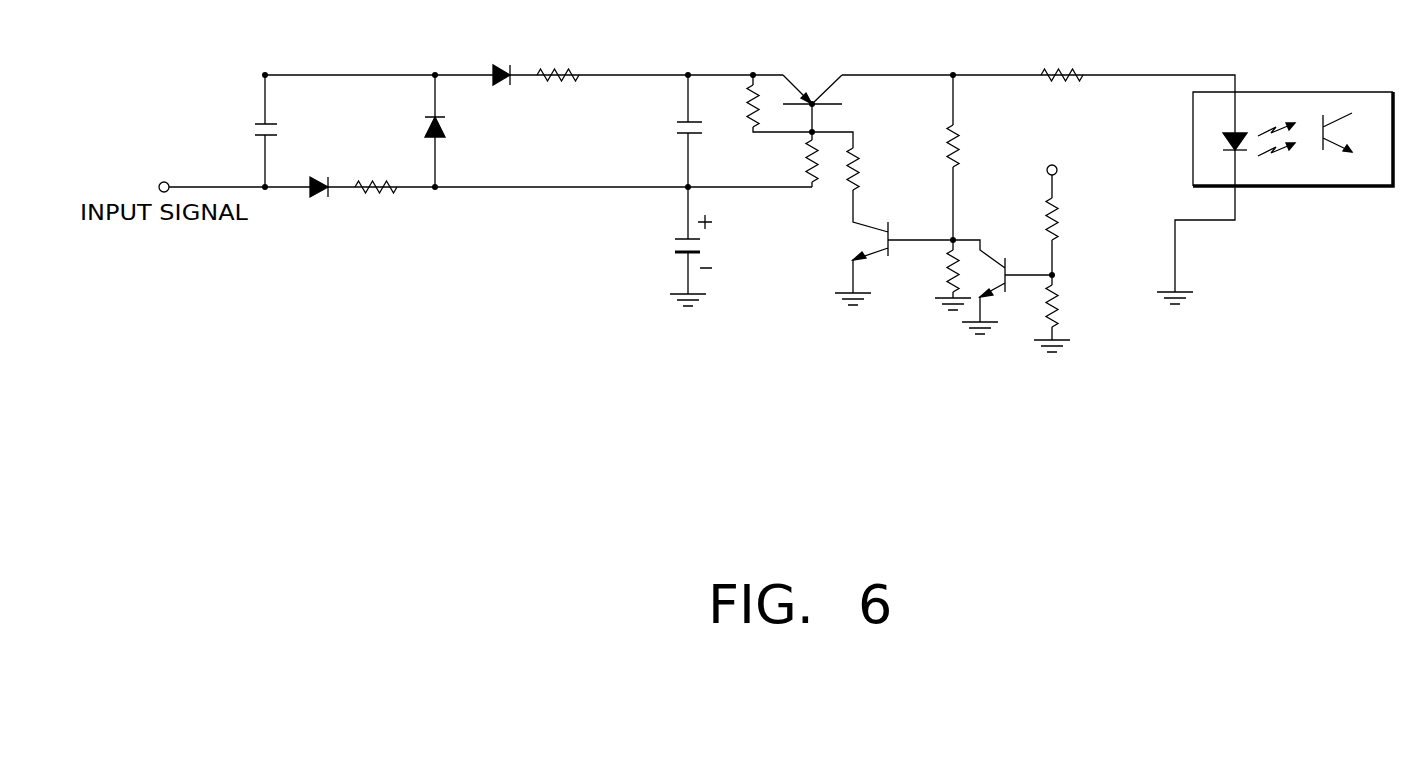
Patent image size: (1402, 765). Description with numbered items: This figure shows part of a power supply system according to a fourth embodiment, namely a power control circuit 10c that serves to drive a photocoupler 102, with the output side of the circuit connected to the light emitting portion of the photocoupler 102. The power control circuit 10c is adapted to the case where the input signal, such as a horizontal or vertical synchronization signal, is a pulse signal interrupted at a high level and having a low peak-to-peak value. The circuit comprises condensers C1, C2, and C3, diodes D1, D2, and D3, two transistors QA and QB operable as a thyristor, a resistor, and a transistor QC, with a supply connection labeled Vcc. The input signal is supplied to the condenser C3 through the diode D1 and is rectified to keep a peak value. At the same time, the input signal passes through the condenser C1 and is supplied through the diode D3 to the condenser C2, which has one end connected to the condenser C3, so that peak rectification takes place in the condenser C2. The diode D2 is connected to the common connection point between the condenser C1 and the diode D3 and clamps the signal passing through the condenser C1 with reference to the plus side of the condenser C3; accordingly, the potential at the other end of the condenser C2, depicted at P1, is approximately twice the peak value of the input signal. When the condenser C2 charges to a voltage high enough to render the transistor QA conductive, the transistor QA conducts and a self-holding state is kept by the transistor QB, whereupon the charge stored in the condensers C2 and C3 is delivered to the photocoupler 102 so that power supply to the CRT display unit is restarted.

The photocoupler 102 is at (1328, 92).
The power control circuit 10c is at (628, 368).
The condenser C1 is at (246, 131).
The condenser C2 is at (667, 131).
The condenser C3 is at (672, 246).
The diode D1 is at (349, 205).
The diode D2 is at (456, 131).
The diode D3 is at (532, 56).
The other end of condenser C2 P1 is at (688, 50).
The transistor QA is at (794, 111).
The transistor QB is at (885, 226).
The transistor QC is at (1002, 279).
The supply voltage Vcc is at (1051, 242).